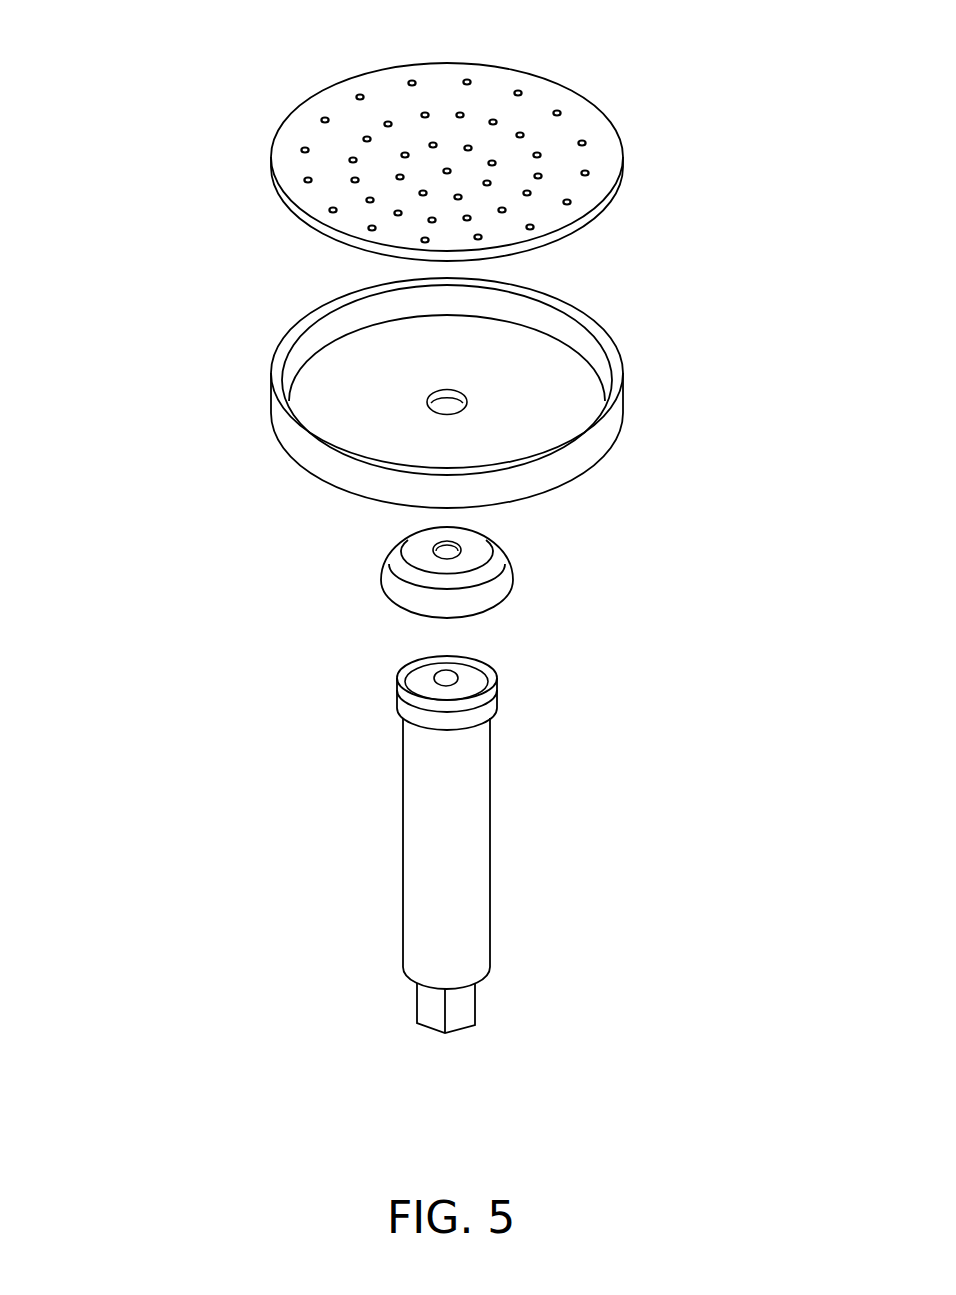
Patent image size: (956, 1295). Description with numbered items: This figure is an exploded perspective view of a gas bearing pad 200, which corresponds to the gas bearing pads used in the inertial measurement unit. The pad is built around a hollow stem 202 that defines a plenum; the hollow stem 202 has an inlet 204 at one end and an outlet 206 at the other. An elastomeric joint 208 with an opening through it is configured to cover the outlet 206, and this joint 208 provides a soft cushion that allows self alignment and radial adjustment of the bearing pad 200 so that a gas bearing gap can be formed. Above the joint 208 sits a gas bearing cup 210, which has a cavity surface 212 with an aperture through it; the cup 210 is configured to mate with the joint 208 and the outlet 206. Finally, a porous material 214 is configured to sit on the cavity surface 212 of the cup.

The gas bearing pad 200 is at (150, 142).
The hollow stem 202 is at (459, 853).
The inlet 204 is at (458, 1029).
The outlet 206 is at (424, 679).
The elastomeric joint 208 is at (513, 580).
The gas bearing cup 210 is at (471, 378).
The cavity surface 212 is at (546, 350).
The porous material 214 is at (498, 76).